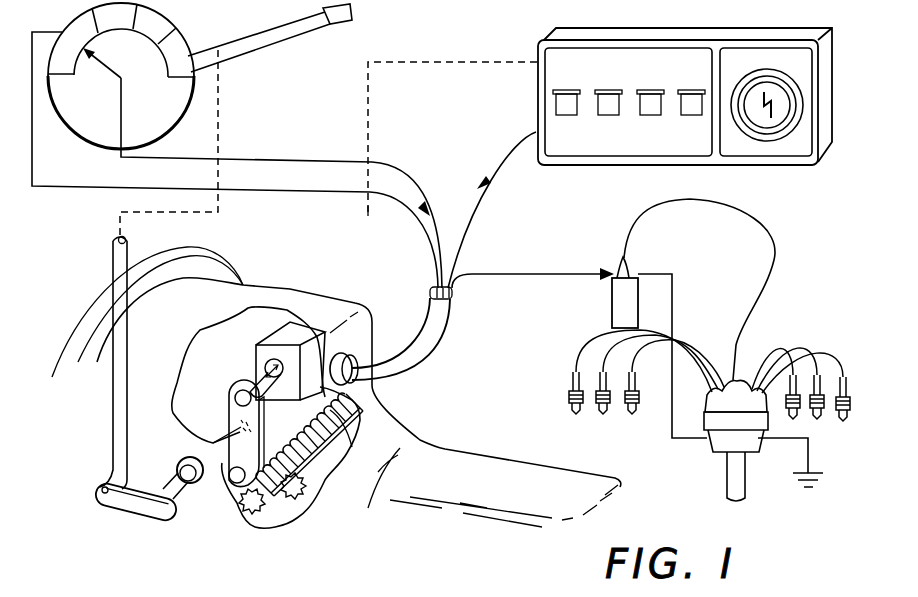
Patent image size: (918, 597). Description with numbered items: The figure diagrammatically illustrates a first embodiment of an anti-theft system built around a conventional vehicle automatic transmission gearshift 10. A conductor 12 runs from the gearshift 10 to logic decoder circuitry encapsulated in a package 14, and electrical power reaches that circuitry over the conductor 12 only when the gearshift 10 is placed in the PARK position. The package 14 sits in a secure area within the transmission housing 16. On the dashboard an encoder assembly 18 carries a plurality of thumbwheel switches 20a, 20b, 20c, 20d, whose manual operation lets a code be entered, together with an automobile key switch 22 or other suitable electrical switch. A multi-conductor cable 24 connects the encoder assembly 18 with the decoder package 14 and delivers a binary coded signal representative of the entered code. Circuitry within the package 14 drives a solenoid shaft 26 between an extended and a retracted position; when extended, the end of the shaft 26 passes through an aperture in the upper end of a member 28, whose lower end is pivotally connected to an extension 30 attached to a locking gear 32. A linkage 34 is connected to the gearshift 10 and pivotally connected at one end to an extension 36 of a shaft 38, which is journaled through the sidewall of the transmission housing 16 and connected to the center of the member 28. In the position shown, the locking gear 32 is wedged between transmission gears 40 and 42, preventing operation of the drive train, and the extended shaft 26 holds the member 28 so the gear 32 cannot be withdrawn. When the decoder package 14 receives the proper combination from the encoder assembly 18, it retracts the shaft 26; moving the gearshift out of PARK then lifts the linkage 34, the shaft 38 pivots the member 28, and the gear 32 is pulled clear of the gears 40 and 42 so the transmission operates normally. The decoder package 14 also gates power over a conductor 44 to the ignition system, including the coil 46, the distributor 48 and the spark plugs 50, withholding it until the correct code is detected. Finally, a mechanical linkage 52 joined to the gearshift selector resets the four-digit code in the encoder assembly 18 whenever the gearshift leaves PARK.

The automatic transmission gearshift 10 is at (166, 9).
The conductor 12 is at (45, 185).
The package 14 is at (296, 334).
The transmission housing 16 is at (187, 287).
The encoder assembly 18 is at (686, 42).
The thumbwheel switch 20a is at (553, 90).
The thumbwheel switch 20b is at (607, 90).
The thumbwheel switch 20c is at (650, 90).
The thumbwheel switch 20d is at (681, 112).
The key switch 22 is at (766, 96).
The multi-conductor cable 24 is at (463, 218).
The solenoid shaft 26 is at (268, 360).
The member 28 is at (236, 415).
The extension 30 is at (263, 472).
The locking gear 32 is at (300, 492).
The linkage 34 is at (118, 398).
The extension 36 is at (140, 504).
The shaft 38 is at (186, 494).
The transmission gear 40 is at (272, 515).
The transmission gear 42 is at (343, 437).
The conductor 44 is at (528, 273).
The coil 46 is at (627, 274).
The distributor 48 is at (723, 437).
The spark plugs 50 is at (610, 428).
The mechanical linkage 52 is at (368, 110).